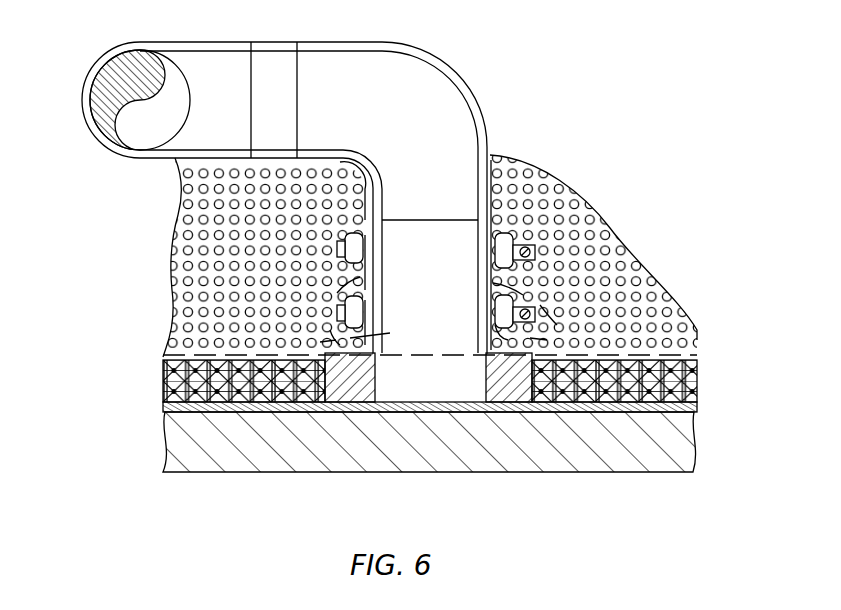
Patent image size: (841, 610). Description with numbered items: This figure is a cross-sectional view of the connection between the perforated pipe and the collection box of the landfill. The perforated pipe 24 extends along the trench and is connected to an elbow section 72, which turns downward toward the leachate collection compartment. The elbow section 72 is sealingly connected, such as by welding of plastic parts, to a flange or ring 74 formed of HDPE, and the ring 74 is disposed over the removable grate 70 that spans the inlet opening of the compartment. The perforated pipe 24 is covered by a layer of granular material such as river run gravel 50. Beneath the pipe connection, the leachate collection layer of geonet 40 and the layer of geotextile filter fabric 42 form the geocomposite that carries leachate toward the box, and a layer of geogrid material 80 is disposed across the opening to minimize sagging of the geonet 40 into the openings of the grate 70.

The perforated pipe 24 is at (138, 157).
The leachate collection layer of geonet 40 is at (165, 392).
The layer of geotextile filter fabric 42 is at (163, 357).
The river run gravel 50 is at (558, 218).
The removable grate 70 is at (602, 472).
The elbow section 72 is at (473, 106).
The flange or ring 74 is at (552, 337).
The layer of geogrid material 80 is at (173, 433).